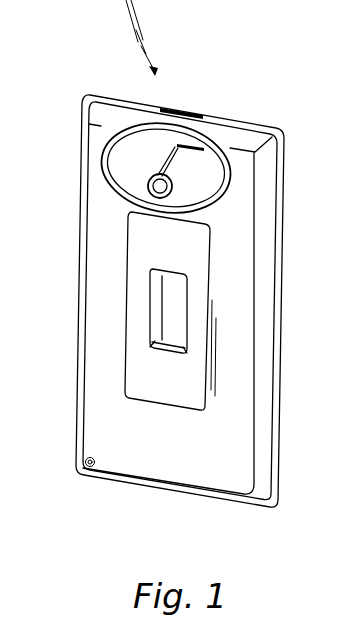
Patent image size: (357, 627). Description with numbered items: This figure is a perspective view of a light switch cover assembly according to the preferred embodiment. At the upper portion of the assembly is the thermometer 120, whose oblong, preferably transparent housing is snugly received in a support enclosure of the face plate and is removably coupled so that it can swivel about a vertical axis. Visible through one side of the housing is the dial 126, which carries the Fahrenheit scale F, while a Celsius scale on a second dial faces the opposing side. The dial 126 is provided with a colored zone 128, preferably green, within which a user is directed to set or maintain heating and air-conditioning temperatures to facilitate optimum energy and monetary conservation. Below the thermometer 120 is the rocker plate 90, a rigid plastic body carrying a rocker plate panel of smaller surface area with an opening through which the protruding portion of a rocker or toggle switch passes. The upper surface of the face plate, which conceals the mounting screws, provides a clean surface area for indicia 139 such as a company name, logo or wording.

The Fahrenheit scale F is at (142, 150).
The thermometer 120 is at (220, 151).
The dial 126 is at (110, 165).
The colored zone 128 is at (184, 148).
The rocker plate 90 is at (128, 275).
The indicia 139 is at (88, 417).